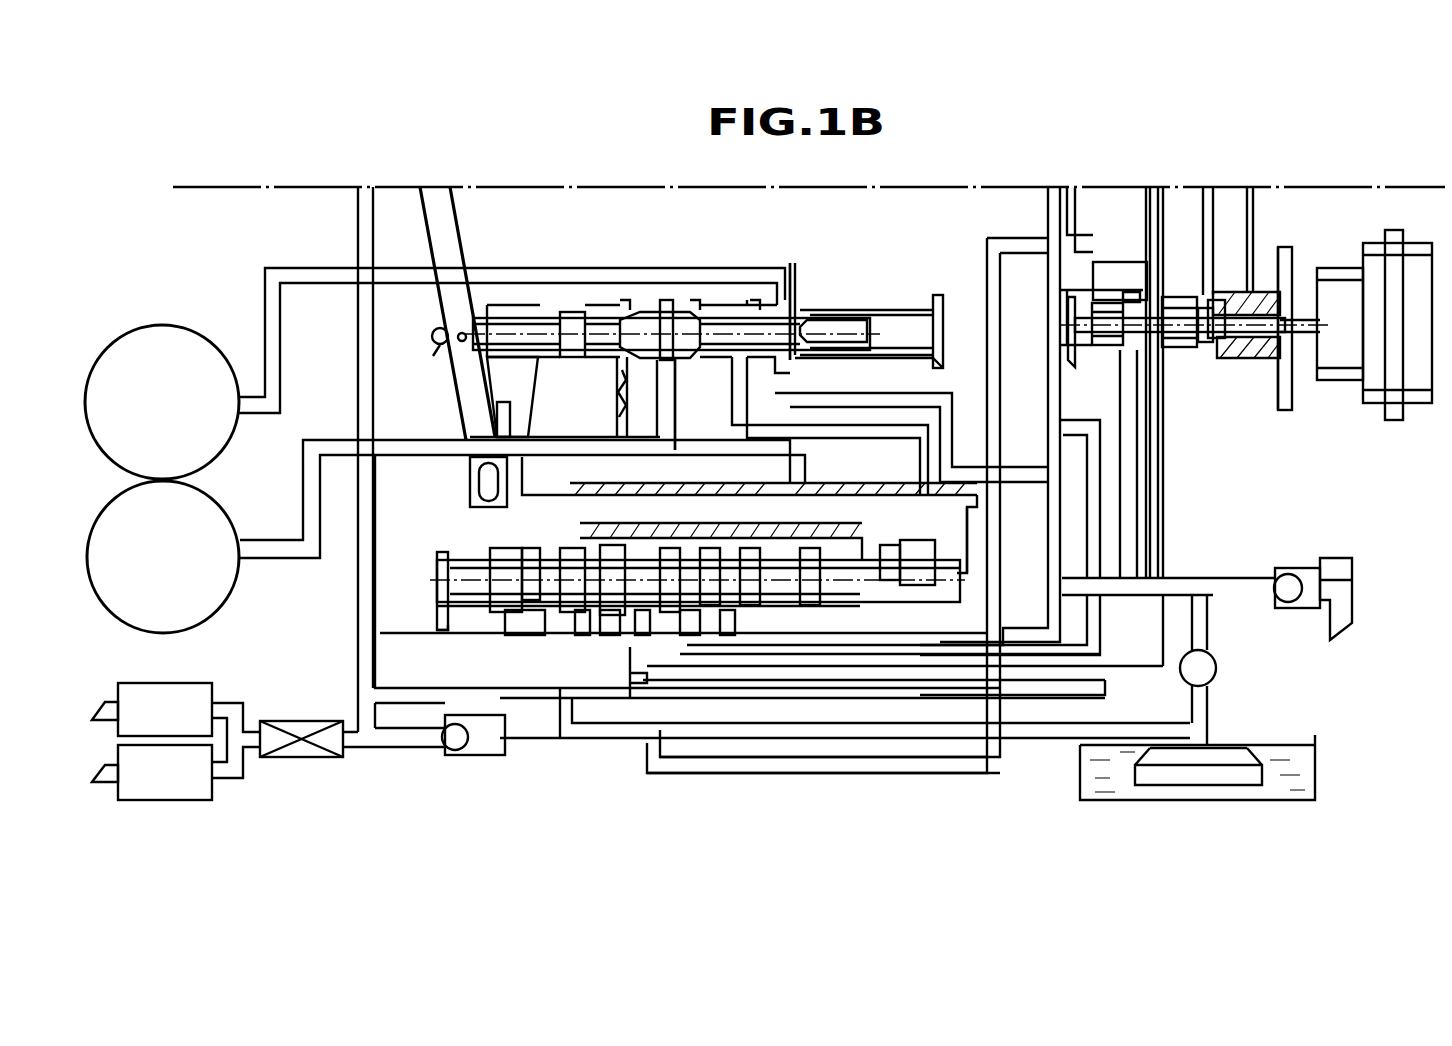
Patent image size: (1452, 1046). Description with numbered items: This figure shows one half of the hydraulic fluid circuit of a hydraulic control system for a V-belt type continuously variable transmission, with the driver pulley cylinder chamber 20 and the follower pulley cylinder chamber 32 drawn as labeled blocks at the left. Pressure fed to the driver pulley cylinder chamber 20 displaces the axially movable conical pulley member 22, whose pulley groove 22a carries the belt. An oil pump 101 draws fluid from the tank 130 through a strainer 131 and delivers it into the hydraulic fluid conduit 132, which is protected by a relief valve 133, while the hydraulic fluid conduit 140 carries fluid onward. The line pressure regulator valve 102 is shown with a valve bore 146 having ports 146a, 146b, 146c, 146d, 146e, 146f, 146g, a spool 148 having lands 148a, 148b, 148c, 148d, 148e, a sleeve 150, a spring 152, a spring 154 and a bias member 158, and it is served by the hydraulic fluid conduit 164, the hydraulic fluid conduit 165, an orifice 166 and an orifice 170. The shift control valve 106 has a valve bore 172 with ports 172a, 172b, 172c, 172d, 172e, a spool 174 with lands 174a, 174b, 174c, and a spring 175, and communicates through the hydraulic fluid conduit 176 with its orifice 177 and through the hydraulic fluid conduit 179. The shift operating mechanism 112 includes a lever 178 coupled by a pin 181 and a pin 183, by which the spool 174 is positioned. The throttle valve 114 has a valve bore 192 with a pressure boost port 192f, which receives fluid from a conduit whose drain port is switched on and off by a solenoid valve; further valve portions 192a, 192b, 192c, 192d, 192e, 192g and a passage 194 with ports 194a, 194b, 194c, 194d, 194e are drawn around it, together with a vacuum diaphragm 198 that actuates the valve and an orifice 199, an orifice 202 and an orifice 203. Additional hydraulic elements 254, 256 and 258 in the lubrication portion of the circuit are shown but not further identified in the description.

The driver pulley cylinder chamber 20 is at (225, 605).
The axially movable conical pulley member 22 is at (530, 380).
The pulley groove 22a is at (515, 410).
The follower pulley cylinder chamber 32 is at (222, 455).
The oil pump 101 is at (1226, 650).
The line pressure regulator valve 102 is at (440, 652).
The shift control valve 106 is at (810, 265).
The shift operating mechanism 112 is at (414, 365).
The throttle valve 114 is at (1235, 420).
The tank 130 is at (1318, 750).
The strainer 131 is at (1215, 750).
The hydraulic fluid conduit 132 is at (858, 648).
The relief valve 133 is at (1300, 570).
The hydraulic fluid conduit 140 is at (1135, 665).
The valve bore 146 is at (530, 590).
The port 146a is at (450, 605).
The port 146b is at (510, 630).
The port 146c is at (540, 590).
The port 146d is at (578, 650).
The port 146e is at (640, 645).
The port 146f is at (640, 630).
The port 146g is at (672, 595).
The spool 148 is at (460, 590).
The land 148a is at (507, 626).
The land 148b is at (440, 578).
The land 148c is at (585, 600).
The land 148d is at (615, 590).
The land 148e is at (695, 585).
The sleeve 150 is at (900, 590).
The spring 152 is at (830, 470).
The spring 154 is at (883, 585).
The bias member 158 is at (977, 510).
The hydraulic fluid conduit 164 is at (572, 740).
The hydraulic fluid conduit 165 is at (705, 773).
The orifice 166 is at (575, 628).
The orifice 170 is at (690, 625).
The valve bore 172 is at (862, 305).
The port 172a is at (616, 368).
The port 172b is at (672, 366).
The port 172c is at (735, 400).
The port 172d is at (795, 362).
The port 172e is at (930, 362).
The spool 174 is at (503, 320).
The land 174a is at (572, 300).
The land 174b is at (683, 315).
The land 174c is at (810, 320).
The spring 175 is at (935, 308).
The hydraulic fluid conduit 176 is at (355, 455).
The orifice 177 is at (624, 395).
The lever 178 is at (430, 237).
The hydraulic fluid conduit 179 is at (318, 283).
The pin 181 is at (435, 333).
The pin 183 is at (470, 492).
The valve bore 192 is at (1150, 300).
The shaft portion 192a is at (1085, 340).
The shaft portion 192b is at (1080, 345).
The passage 192c is at (1127, 350).
The passage 192d is at (1160, 345).
The collar 192e is at (1170, 345).
The pressure boost port 192f is at (1207, 345).
The bearing 192g is at (1240, 355).
The pressure line 194 is at (1085, 335).
The port 194a is at (1080, 300).
The port 194b is at (1080, 310).
The port 194c is at (1165, 300).
The port 194d is at (1222, 300).
The port 194e is at (1245, 320).
The vacuum diaphragm 198 is at (1412, 243).
The orifice 199 is at (640, 700).
The orifice 202 is at (1102, 262).
The orifice 203 is at (1273, 248).
The pressure line 254 is at (358, 360).
The lubrication valve 256 is at (308, 720).
The lubrication pump 258 is at (445, 750).